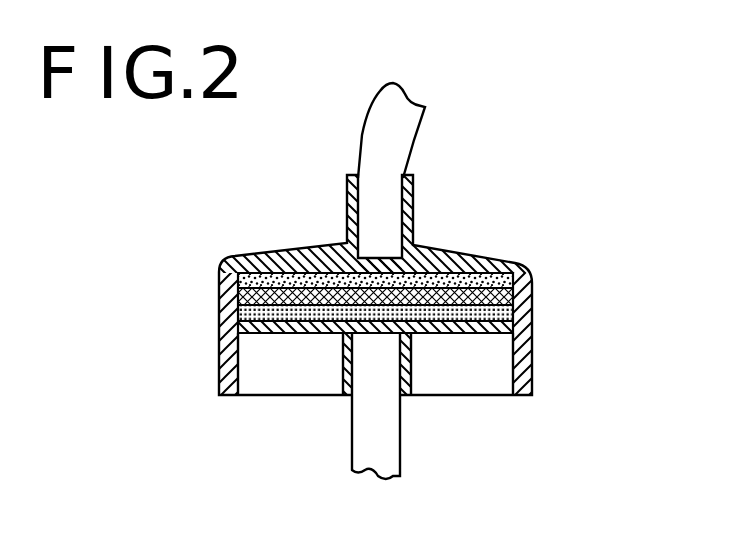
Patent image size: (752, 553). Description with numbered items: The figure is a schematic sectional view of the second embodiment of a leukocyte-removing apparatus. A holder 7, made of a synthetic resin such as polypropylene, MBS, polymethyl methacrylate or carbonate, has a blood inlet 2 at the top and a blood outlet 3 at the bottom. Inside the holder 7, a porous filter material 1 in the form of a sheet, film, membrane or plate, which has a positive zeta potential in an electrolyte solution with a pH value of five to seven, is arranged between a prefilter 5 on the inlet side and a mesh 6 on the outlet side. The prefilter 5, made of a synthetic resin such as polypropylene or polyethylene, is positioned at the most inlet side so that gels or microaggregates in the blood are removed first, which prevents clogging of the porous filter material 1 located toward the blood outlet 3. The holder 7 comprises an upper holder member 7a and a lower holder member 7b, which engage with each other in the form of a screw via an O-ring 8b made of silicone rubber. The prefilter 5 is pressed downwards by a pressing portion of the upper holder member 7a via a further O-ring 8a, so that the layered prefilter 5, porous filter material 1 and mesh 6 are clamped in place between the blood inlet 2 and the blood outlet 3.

The porous filter material 1 is at (512, 300).
The blood inlet 2 is at (404, 106).
The blood outlet 3 is at (377, 462).
The prefilter 5 is at (438, 268).
The mesh 6 is at (478, 337).
The holder 7 is at (546, 335).
The upper holder member 7a is at (487, 262).
The lower holder member 7b is at (527, 366).
The O-ring 8a is at (510, 279).
The O-ring 8b is at (513, 315).